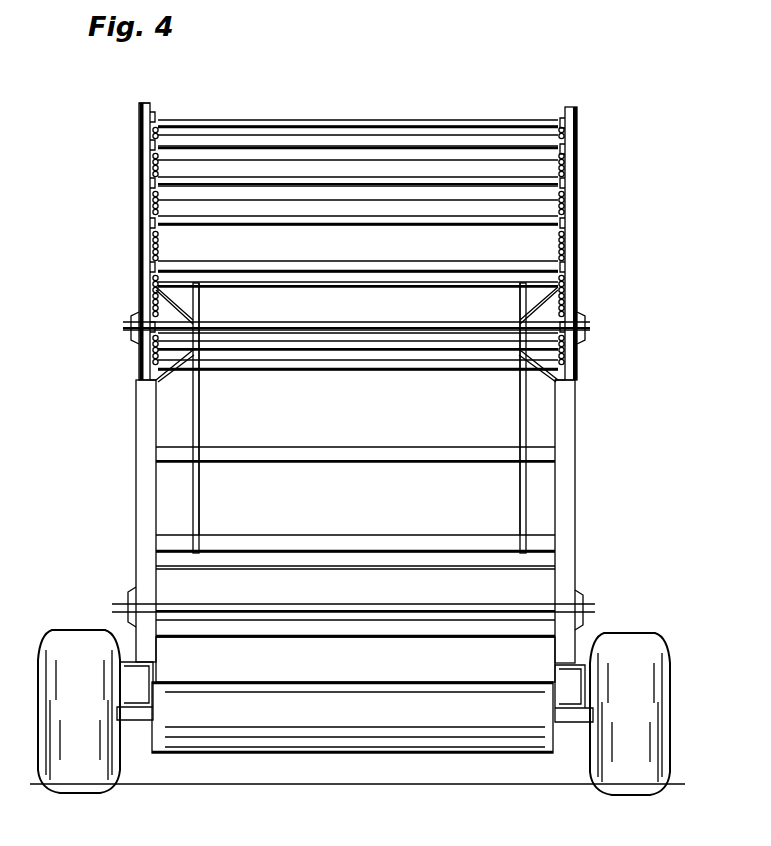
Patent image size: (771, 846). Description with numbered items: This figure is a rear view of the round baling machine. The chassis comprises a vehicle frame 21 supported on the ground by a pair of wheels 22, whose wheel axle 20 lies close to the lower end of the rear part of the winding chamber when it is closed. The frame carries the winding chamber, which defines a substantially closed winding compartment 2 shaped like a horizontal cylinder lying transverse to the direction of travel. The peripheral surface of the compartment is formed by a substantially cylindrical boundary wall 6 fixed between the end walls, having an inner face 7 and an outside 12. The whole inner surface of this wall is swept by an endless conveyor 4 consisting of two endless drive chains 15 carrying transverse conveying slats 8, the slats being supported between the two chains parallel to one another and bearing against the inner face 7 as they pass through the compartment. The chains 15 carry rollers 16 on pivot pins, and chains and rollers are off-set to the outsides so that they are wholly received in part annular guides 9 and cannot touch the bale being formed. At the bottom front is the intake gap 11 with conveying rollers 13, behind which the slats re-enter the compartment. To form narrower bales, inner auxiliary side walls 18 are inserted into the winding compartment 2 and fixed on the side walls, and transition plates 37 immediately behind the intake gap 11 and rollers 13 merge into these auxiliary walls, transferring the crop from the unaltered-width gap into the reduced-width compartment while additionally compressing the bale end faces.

The endless conveyor 4 is at (162, 101).
The drive chains 15 is at (158, 138).
The rollers 16 is at (567, 120).
The boundary wall 6 is at (310, 140).
The transverse conveying slats 8 is at (410, 148).
The outside of the boundary wall 12 is at (467, 165).
The transition plates 37 is at (150, 305).
The inner face of the boundary wall 7 is at (543, 417).
The part annular guides 9 is at (140, 450).
The inner auxiliary side walls 18 is at (192, 510).
The winding compartment 2 is at (304, 508).
The vehicle frame 21 is at (130, 662).
The intake gap 11 is at (330, 671).
The conveying rollers 13 is at (275, 738).
The wheel axle 20 is at (575, 715).
The wheels 22 is at (632, 640).